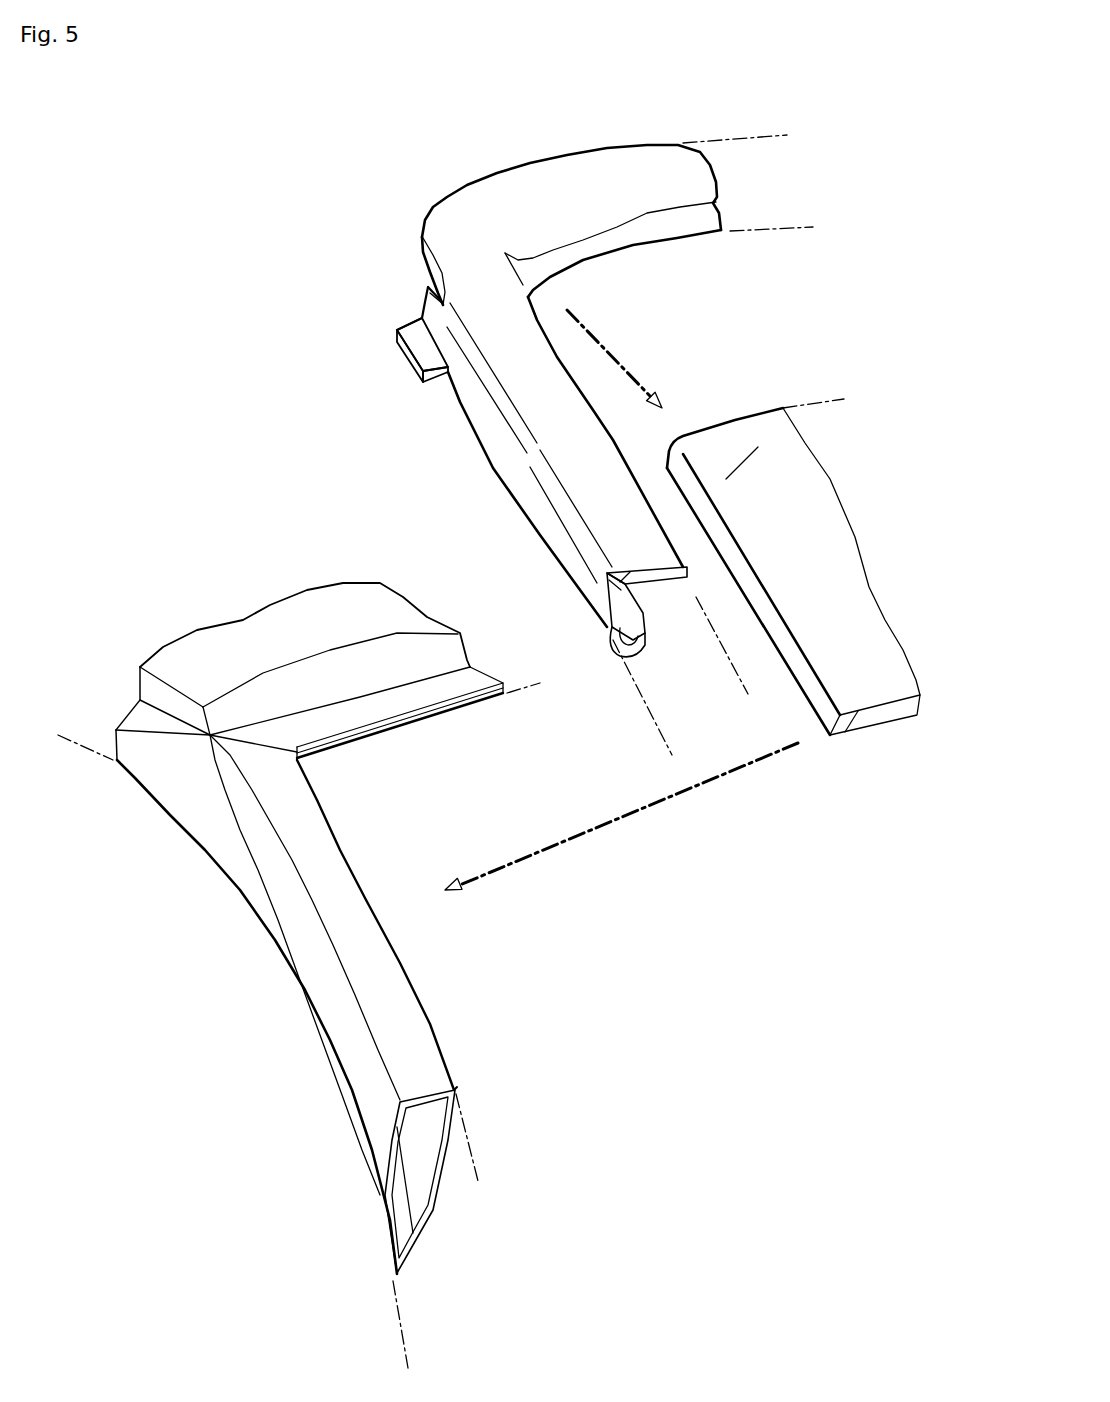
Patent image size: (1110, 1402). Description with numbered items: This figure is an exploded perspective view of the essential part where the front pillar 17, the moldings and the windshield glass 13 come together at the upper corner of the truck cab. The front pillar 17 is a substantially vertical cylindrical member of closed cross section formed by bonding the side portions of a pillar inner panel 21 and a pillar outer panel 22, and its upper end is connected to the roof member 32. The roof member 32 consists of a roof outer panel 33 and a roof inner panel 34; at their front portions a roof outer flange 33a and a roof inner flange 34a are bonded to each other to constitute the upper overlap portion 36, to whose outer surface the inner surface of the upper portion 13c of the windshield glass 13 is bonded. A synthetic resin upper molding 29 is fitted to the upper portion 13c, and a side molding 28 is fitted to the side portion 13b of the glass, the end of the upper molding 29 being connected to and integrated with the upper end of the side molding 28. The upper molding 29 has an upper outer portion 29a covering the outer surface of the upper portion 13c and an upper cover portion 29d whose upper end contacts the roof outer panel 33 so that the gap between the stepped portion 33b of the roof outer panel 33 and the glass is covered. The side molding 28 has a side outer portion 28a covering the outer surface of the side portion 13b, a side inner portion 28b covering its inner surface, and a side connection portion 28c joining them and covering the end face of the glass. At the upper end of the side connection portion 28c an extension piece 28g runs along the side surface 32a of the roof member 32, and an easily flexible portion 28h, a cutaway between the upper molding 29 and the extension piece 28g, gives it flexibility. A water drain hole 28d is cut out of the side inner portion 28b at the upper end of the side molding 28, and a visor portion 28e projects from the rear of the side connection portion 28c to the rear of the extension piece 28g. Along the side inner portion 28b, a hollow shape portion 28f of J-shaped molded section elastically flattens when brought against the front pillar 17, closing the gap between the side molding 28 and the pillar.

The windshield glass 13 is at (737, 409).
The side portion of the windshield glass 13b is at (803, 608).
The upper portion of the windshield glass 13c is at (773, 434).
The front pillar 17 is at (291, 974).
The pillar inner panel 21 is at (443, 1185).
The pillar outer panel 22 is at (386, 1146).
The side molding 28 is at (490, 467).
The side outer portion 28a is at (605, 522).
The side inner portion 28b is at (637, 598).
The side connection portion 28c is at (577, 560).
The water drain hole 28d is at (443, 382).
The visor portion 28e is at (403, 353).
The hollow shape portion 28f is at (633, 650).
The extension piece 28g is at (428, 290).
The easily flexible portion 28h is at (423, 243).
The upper molding 29 is at (565, 158).
The upper outer portion 29a is at (650, 230).
The upper cover portion 29d is at (615, 173).
The roof member 32 is at (243, 600).
The side surface of the roof member 32a is at (177, 697).
The roof outer panel 33 is at (203, 630).
The roof outer flange 33a is at (367, 710).
The stepped portion of the roof outer panel 33b is at (340, 677).
The roof inner panel 34 is at (480, 707).
The roof inner flange 34a is at (417, 727).
The upper overlap portion 36 is at (360, 782).